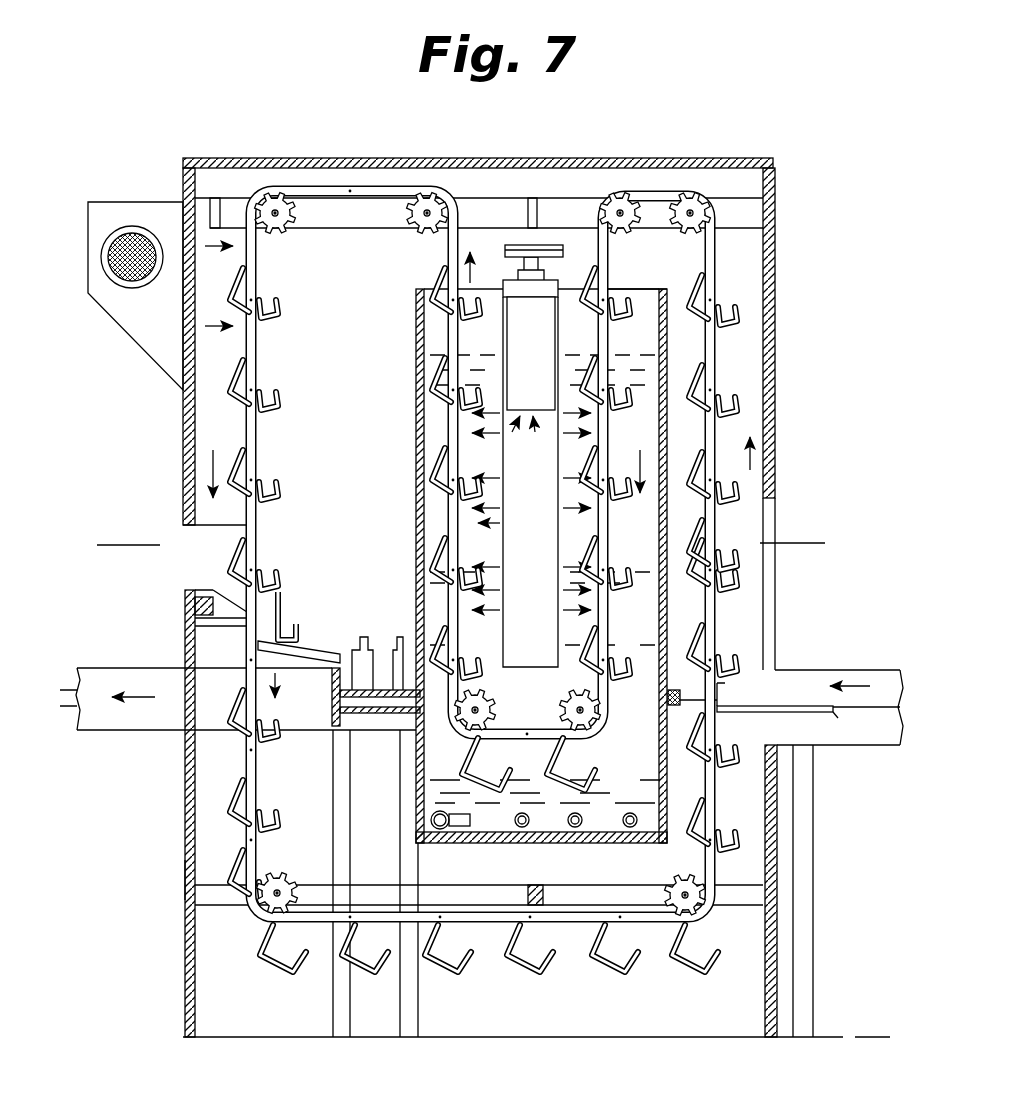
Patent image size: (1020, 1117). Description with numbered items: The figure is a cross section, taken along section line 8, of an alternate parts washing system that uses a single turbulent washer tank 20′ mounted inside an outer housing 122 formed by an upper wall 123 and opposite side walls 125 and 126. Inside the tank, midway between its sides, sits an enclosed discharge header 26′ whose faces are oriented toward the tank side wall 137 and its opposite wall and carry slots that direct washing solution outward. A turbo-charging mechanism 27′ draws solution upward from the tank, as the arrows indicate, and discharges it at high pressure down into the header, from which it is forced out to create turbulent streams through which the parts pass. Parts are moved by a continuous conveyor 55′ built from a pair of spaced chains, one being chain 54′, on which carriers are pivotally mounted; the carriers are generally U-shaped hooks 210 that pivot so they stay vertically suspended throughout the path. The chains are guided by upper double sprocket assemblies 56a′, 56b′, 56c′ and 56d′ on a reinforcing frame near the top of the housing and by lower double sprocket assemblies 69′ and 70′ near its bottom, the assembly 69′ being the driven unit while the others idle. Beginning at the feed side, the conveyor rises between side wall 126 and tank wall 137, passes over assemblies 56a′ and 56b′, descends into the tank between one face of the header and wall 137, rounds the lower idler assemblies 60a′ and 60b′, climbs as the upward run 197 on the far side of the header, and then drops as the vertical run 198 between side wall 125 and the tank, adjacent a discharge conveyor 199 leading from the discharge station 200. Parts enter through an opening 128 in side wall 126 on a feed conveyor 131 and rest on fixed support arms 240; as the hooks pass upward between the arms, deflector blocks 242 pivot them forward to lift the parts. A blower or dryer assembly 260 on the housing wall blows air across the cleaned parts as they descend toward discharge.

The section line 8- 8 is at (117, 505).
The turbulent washer tank 20′ is at (425, 483).
The discharge header 26′ is at (548, 509).
The turbo-charging mechanism 27′ is at (498, 338).
The continuous conveyor chain 54′ is at (723, 301).
The continuous conveyor 55′ is at (730, 554).
The double sprocket assembly 56a′ is at (706, 200).
The double sprocket assembly 56b′ is at (629, 206).
The double sprocket assembly 56c′ is at (436, 206).
The double sprocket assembly 56d′ is at (284, 206).
The lower double sprocket assembly 60a′ is at (583, 718).
The lower double sprocket assembly 60b′ is at (492, 703).
The drive double sprocket assembly 69′ is at (283, 887).
The double sprocket assembly 70′ is at (674, 884).
The outer housing 122 is at (178, 436).
The upper wall 123 is at (545, 136).
The side wall 125 is at (185, 780).
The side wall 126 is at (770, 362).
The opening 128 is at (773, 512).
The parts feed conveyor 131 is at (850, 668).
The side wall of wash tank 137 is at (683, 277).
The second upwardly extending conveyor run 197 is at (440, 401).
The vertical conveyor run 198 is at (247, 578).
The discharge conveyor 199 is at (358, 705).
The discharge station 200 is at (372, 599).
The U-shaped hooks 210 is at (736, 586).
The fixed support arms 240 is at (833, 716).
The deflector blocks 242 is at (718, 710).
The blower or dryer assembly 260 is at (148, 360).